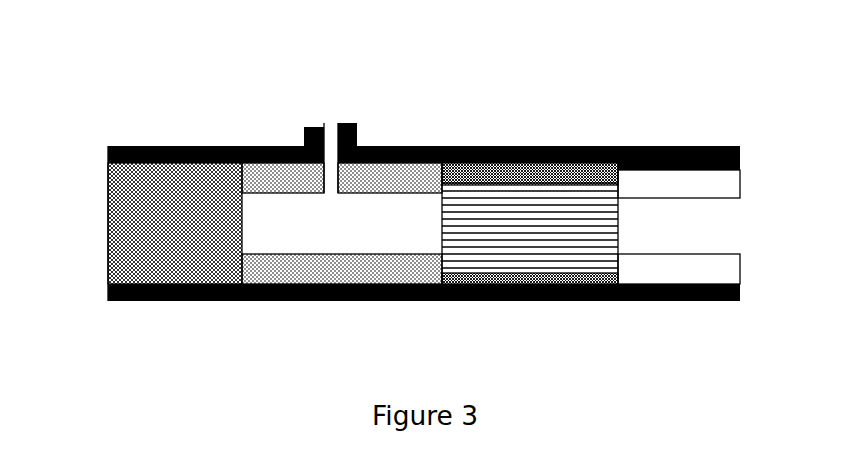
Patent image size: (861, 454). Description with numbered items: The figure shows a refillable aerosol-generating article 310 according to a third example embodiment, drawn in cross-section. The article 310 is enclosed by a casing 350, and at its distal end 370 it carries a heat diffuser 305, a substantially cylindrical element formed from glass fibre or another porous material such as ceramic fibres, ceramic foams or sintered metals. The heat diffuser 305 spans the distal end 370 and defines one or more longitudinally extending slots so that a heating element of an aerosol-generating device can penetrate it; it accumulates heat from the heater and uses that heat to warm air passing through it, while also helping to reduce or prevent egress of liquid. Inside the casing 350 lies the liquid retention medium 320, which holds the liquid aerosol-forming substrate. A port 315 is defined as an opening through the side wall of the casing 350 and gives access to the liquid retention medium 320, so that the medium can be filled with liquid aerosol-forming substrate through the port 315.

The refillable aerosol-generating article 310 is at (674, 102).
The heat diffuser 305 is at (153, 245).
The port 315 is at (331, 116).
The liquid retention medium 320 is at (387, 185).
The casing 350 is at (492, 302).
The distal end 370 is at (108, 252).